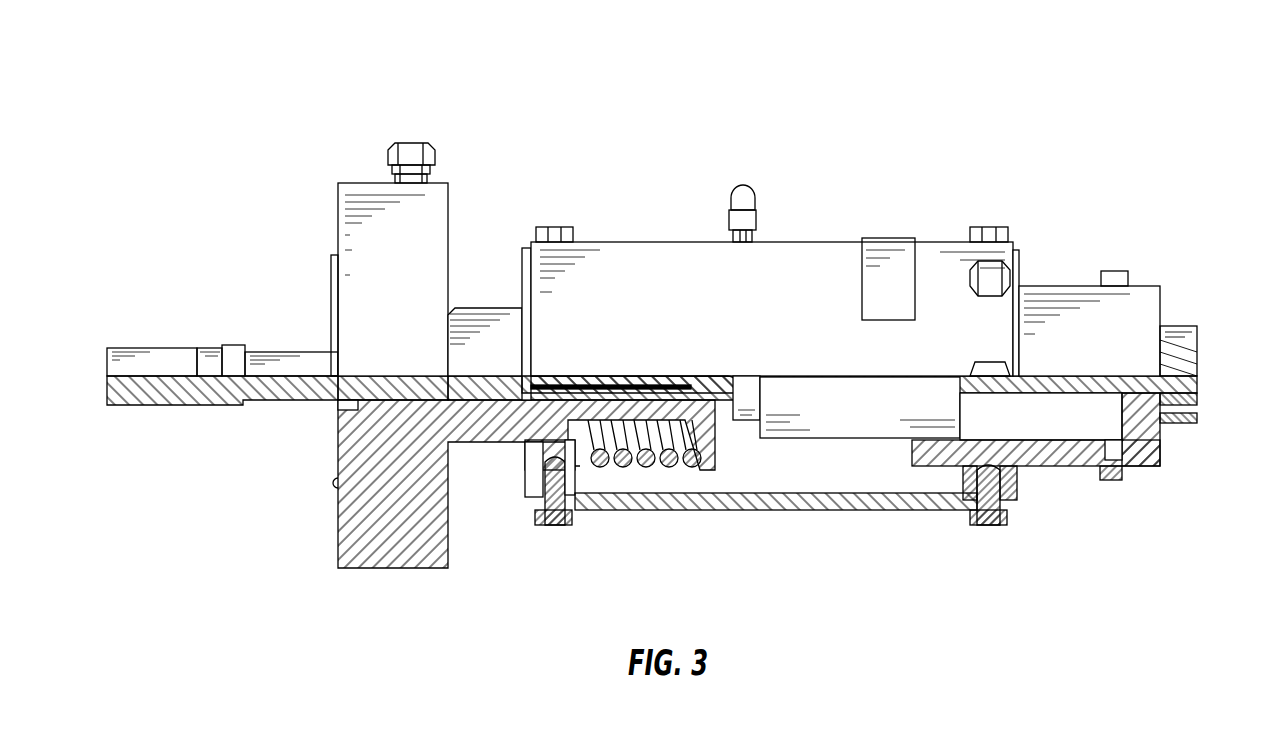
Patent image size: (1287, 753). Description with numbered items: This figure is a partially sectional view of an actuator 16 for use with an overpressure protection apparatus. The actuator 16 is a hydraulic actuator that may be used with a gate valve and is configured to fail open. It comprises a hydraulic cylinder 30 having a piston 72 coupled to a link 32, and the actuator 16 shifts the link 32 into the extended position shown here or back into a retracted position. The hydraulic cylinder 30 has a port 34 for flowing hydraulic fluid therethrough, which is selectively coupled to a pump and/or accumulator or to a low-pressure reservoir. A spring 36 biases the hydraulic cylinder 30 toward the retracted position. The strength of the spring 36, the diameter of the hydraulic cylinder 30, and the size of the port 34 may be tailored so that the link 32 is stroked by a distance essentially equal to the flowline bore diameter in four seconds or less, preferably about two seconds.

The actuator 16 is at (262, 86).
The hydraulic cylinder 30 is at (1040, 286).
The link 32 is at (292, 352).
The port 34 is at (1110, 480).
The spring 36 is at (645, 466).
The piston 72 is at (850, 432).